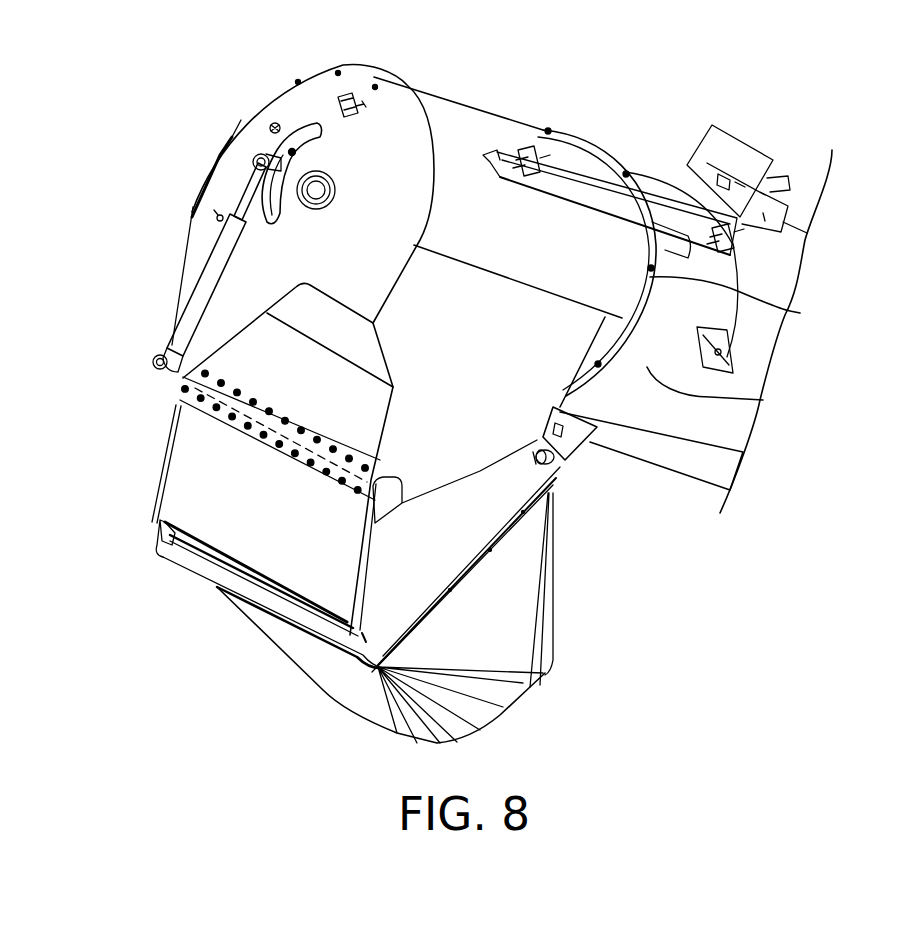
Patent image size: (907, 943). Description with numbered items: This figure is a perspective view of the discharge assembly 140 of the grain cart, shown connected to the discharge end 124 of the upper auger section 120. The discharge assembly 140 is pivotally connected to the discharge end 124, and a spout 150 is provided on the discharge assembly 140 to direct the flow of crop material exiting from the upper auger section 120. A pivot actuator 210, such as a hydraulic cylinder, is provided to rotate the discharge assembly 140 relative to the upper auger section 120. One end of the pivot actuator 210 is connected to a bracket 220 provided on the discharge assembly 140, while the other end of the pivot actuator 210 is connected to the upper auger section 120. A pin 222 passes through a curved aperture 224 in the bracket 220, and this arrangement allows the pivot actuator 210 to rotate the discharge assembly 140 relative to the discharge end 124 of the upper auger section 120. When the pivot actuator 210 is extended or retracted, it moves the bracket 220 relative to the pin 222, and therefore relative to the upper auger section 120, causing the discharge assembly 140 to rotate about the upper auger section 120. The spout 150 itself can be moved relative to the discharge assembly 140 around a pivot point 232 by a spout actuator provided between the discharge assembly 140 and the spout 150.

The upper auger section 120 is at (760, 400).
The discharge end 124 is at (800, 313).
The discharge assembly 140 is at (447, 352).
The spout 150 is at (553, 610).
The pivot actuator 210 is at (207, 285).
The bracket 220 is at (392, 163).
The pin 222 is at (257, 156).
The curved aperture 224 is at (314, 120).
The pivot point 232 is at (562, 468).